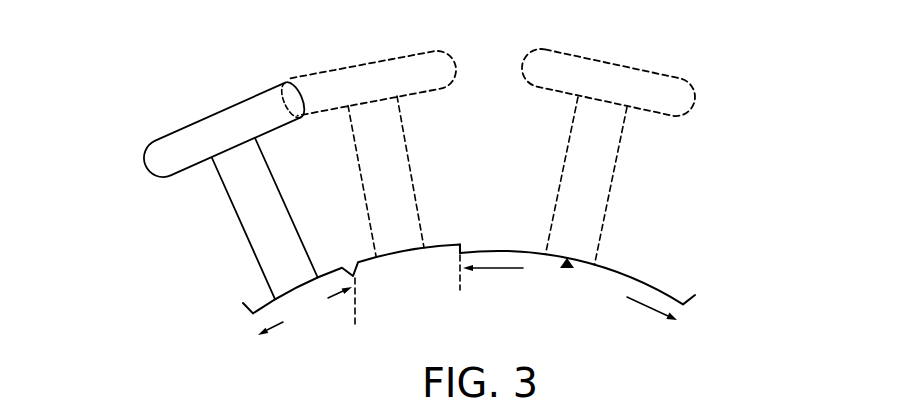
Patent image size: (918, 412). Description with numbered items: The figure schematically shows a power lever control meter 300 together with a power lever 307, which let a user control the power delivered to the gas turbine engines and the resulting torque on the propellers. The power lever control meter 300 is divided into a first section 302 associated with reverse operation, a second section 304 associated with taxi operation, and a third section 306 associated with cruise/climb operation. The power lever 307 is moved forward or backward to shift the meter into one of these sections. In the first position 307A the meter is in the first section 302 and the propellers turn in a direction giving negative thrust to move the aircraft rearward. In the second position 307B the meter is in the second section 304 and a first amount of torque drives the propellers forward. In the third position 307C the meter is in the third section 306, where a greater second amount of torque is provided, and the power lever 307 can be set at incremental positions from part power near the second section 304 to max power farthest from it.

The power lever control meter 300 is at (718, 140).
The first section 302 is at (187, 246).
The second section 304 is at (447, 230).
The third section 306 is at (618, 240).
The power lever 307 is at (172, 199).
The first position 307A is at (213, 115).
The second position 307B is at (360, 64).
The third position 307C is at (617, 64).